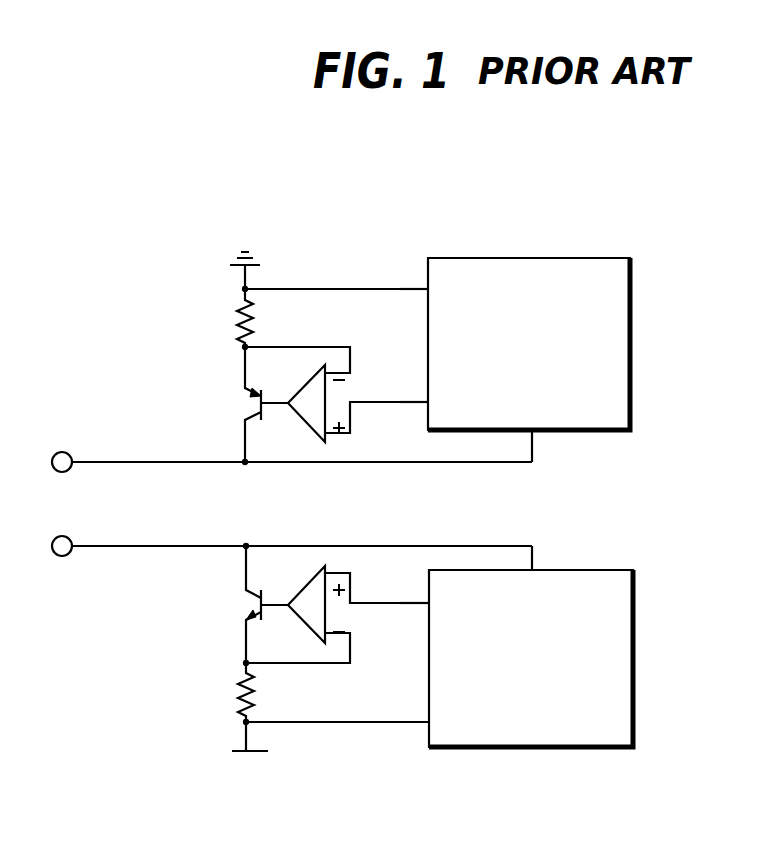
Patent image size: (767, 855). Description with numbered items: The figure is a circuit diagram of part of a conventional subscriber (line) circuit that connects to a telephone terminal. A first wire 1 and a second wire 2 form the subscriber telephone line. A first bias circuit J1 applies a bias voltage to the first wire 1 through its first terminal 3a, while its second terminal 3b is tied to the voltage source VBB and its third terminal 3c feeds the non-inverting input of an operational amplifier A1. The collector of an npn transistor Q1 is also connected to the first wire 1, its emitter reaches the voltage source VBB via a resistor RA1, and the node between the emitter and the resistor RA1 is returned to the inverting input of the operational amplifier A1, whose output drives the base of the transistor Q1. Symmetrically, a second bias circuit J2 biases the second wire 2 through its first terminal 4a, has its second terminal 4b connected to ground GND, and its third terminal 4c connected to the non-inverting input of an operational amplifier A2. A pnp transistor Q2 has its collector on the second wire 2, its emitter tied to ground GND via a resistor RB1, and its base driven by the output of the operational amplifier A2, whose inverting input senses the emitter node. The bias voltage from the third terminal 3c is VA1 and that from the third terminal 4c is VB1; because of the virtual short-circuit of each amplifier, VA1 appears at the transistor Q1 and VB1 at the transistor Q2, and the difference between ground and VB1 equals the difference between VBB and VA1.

The first wire 1 is at (62, 557).
The second wire 2 is at (62, 452).
The first terminal 3a is at (538, 568).
The second terminal 3b is at (426, 723).
The third terminal 3c is at (426, 606).
The first terminal 4a is at (535, 432).
The second terminal 4b is at (426, 289).
The third terminal 4c is at (426, 405).
The first bias circuit J1 is at (636, 680).
The second bias circuit J2 is at (494, 258).
The npn transistor Q1 is at (242, 604).
The pnp transistor Q2 is at (236, 404).
The operational amplifier A1 is at (300, 604).
The operational amplifier A2 is at (300, 410).
The resistor RA1 is at (213, 692).
The resistor RB1 is at (210, 318).
The bias voltage VA1 is at (377, 588).
The bias voltage VB1 is at (376, 400).
The ground GND is at (238, 257).
The voltage source VBB is at (243, 759).